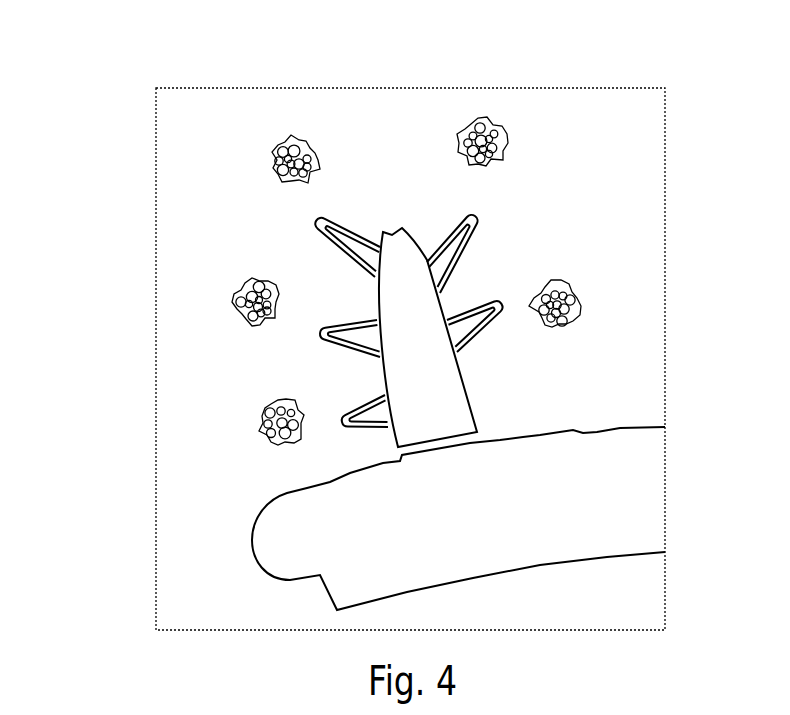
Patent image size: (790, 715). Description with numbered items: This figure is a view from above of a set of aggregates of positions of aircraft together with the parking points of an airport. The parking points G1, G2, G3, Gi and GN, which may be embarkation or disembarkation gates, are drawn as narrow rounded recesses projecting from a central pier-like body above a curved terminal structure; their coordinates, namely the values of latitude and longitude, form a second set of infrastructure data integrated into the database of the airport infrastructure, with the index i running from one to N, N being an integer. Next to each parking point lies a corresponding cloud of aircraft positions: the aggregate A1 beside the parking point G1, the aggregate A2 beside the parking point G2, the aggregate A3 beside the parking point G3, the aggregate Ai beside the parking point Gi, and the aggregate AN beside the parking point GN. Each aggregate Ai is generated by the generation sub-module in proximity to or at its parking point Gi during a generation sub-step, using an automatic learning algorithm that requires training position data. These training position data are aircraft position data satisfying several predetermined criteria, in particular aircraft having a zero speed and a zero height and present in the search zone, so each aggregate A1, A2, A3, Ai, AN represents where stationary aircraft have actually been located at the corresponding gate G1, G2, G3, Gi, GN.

The aggregate of positions of aircraft A1 is at (248, 151).
The aggregate of positions of aircraft A2 is at (160, 302).
The aggregate of positions of aircraft A3 is at (173, 439).
The aggregate of positions of aircraft Ai is at (555, 96).
The aggregate of positions of aircraft AN is at (636, 285).
The parking point G1 is at (287, 212).
The parking point G2 is at (211, 367).
The parking point G3 is at (215, 474).
The parking point Gi is at (578, 208).
The parking point GN is at (595, 342).